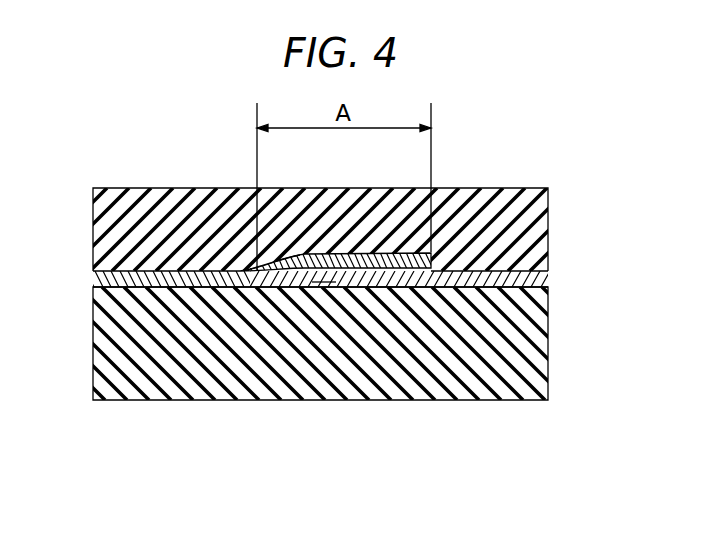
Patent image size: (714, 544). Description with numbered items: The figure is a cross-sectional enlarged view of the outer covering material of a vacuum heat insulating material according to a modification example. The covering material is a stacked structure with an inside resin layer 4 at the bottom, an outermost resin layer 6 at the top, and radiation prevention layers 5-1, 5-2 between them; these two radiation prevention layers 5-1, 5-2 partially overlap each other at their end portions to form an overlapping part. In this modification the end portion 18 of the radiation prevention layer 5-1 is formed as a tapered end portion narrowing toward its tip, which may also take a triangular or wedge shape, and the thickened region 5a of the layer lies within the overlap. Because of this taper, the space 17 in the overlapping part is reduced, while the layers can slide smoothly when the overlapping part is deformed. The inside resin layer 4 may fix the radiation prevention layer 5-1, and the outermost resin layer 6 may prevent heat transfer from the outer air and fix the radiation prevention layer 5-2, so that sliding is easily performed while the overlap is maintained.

The inside resin layer 4 is at (487, 397).
The outermost resin layer 6 is at (483, 196).
The radiation prevention layer 5-1 is at (549, 258).
The radiation prevention layer 5-2 is at (93, 258).
The thick film portion 5a is at (385, 253).
The space 17 is at (270, 262).
The end portion 18 is at (325, 288).